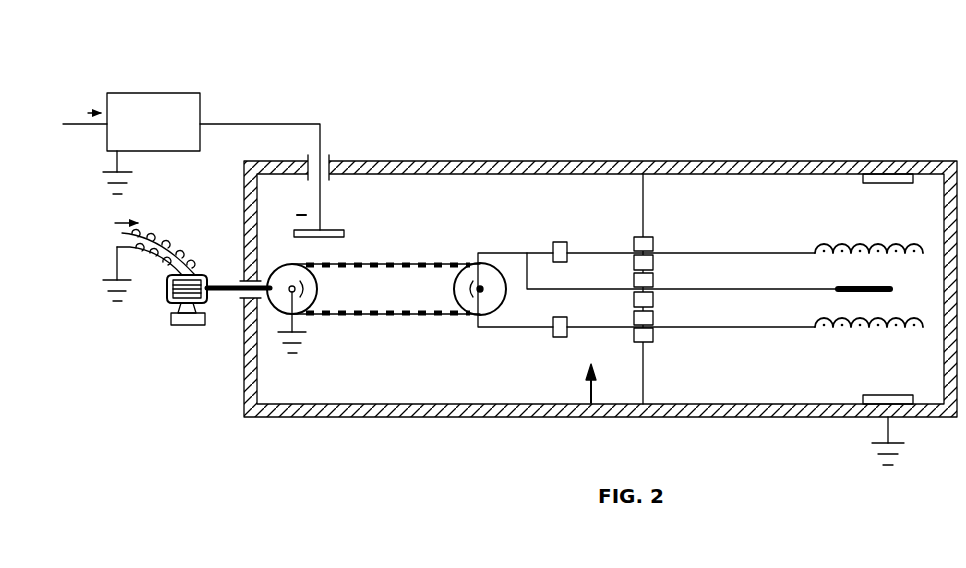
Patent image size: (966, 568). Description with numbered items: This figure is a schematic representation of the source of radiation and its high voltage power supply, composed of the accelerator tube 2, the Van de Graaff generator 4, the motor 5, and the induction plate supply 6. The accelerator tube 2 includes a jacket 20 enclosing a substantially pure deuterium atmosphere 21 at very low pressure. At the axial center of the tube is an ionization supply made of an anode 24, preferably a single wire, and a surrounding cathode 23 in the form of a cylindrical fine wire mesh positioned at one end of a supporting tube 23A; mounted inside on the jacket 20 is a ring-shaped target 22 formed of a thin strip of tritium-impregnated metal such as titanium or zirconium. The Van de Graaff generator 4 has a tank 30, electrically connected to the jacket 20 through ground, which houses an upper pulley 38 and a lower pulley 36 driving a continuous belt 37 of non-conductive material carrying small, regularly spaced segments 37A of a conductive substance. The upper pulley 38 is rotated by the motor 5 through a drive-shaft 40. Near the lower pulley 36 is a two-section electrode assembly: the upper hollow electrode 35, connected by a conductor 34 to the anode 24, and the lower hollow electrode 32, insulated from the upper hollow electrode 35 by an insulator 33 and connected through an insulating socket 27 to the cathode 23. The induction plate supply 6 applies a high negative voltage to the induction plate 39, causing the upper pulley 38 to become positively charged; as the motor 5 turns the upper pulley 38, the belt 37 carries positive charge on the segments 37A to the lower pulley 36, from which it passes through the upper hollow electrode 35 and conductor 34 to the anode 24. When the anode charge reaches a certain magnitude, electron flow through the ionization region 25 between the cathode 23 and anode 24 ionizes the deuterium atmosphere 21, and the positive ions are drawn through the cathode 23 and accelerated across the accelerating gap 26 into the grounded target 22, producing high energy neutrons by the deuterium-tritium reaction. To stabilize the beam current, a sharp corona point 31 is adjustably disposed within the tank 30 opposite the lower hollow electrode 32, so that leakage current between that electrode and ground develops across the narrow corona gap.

The accelerator tube 2 is at (750, 158).
The Van de Graaff generator 4 is at (516, 158).
The motor 5 is at (209, 252).
The induction plate supply 6 is at (190, 94).
The jacket 20 is at (722, 418).
The deuterium atmosphere 21 is at (763, 367).
The target 22 is at (887, 184).
The cathode 23 is at (870, 250).
The supporting tube 23A is at (798, 253).
The anode 24 is at (890, 287).
The ionization region 25 is at (853, 308).
The accelerating gap 26 is at (858, 358).
The insulating socket 27 is at (653, 240).
The tank 30 is at (495, 403).
The corona point 31 is at (587, 381).
The lower hollow electrode 32 is at (620, 253).
The insulator 33 is at (568, 242).
The conductor 34 is at (574, 289).
The upper hollow electrode 35 is at (517, 252).
The lower pulley 36 is at (460, 302).
The continuous belt 37 is at (447, 264).
The segments of conductive substance 37A is at (408, 275).
The upper pulley 38 is at (313, 275).
The induction plate 39 is at (322, 231).
The drive-shaft 40 is at (214, 290).